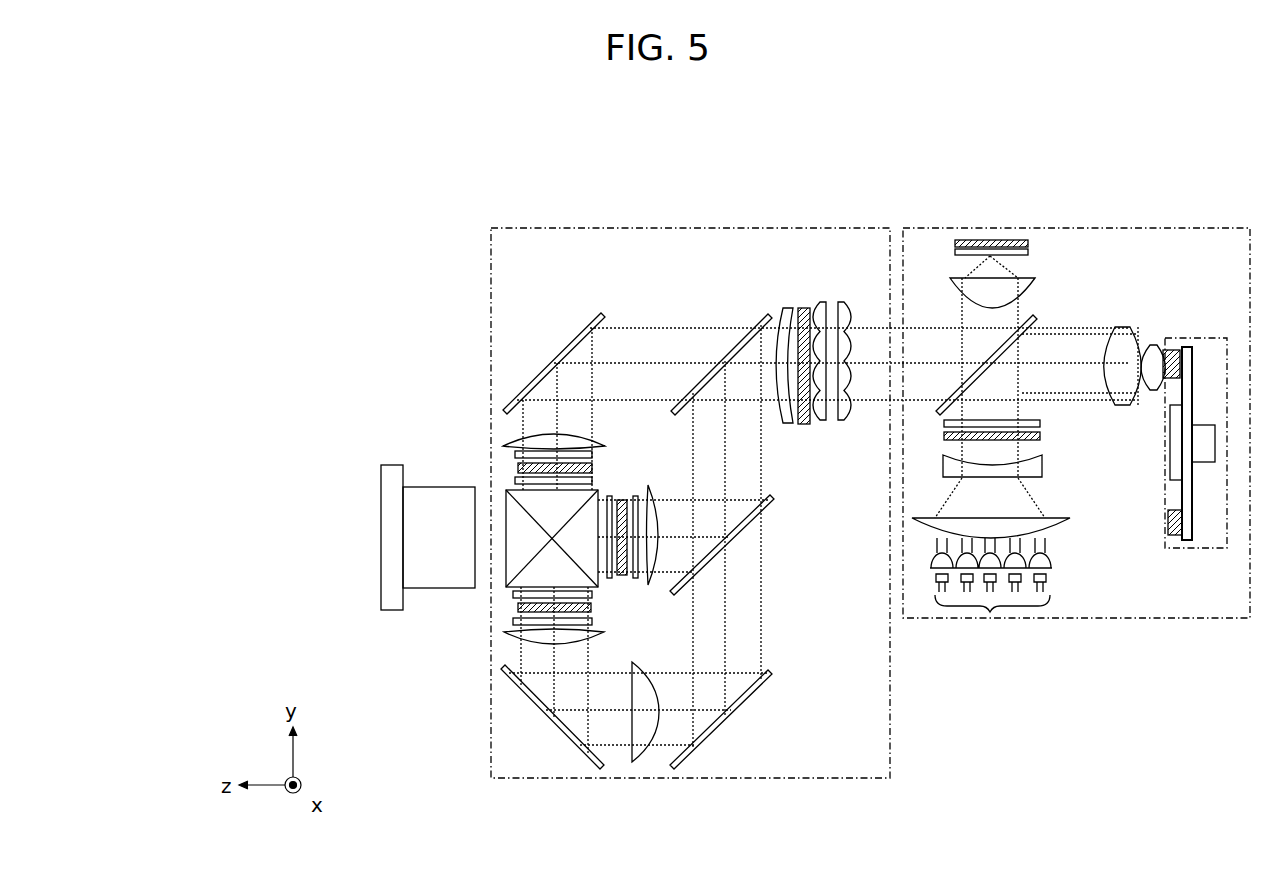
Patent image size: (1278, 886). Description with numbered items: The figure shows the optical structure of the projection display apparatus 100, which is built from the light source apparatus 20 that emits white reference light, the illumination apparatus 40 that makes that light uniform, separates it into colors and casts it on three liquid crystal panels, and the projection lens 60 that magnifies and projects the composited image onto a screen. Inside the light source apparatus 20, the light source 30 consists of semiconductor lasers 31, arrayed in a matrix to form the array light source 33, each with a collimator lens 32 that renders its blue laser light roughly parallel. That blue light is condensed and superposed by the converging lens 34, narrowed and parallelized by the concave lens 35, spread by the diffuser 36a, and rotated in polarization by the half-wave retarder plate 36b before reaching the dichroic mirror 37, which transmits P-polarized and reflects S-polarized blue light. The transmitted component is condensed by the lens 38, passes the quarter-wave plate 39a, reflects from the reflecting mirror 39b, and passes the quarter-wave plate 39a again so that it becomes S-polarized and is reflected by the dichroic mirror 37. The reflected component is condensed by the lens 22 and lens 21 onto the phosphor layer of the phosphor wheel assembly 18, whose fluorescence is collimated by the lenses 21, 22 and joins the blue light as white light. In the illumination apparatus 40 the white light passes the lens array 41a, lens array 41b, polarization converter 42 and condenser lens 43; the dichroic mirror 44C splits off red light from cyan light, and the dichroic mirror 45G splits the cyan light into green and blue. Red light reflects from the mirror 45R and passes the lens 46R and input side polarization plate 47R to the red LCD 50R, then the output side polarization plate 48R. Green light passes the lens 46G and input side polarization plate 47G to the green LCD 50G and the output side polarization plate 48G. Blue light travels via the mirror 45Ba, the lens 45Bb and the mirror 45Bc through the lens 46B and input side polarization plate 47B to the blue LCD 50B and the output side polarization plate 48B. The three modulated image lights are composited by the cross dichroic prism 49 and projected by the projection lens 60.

The projection display apparatus 100 is at (495, 207).
The illumination apparatus 40 is at (893, 735).
The light source apparatus 20 is at (1228, 618).
The phosphor wheel assembly 18 is at (1205, 548).
The lens 21 is at (1156, 344).
The lens 22 is at (1138, 328).
The light source 30 is at (1058, 614).
The semiconductor laser 31 is at (1048, 580).
The collimator lens 32 is at (1050, 570).
The array light source 33 is at (990, 612).
The converging lens 34 is at (912, 523).
The concave lens 35 is at (943, 466).
The diffuser 36a is at (943, 437).
The half-wave retarder plate 36b is at (1040, 423).
The dichroic mirror 37 is at (1036, 318).
The lens 38 is at (1035, 281).
The λ/4 wavelength plate 39a is at (1030, 250).
The reflecting mirror 39b is at (963, 240).
The lens array 41a is at (840, 300).
The lens array 41b is at (818, 300).
The polarization converter 42 is at (801, 306).
The condenser lens 43 is at (782, 308).
The dichroic mirror 44C is at (718, 360).
The mirror 45R is at (553, 358).
The dichroic mirror 45G is at (728, 548).
The mirror 45Ba is at (743, 705).
The lens 45Bb is at (637, 753).
The mirror 45Bc is at (552, 720).
The lens 46R is at (512, 440).
The lens 46G is at (649, 492).
The lens 46B is at (513, 637).
The input side polarization plate 47R is at (515, 455).
The input side polarization plate 47G is at (635, 496).
The input side polarization plate 47B is at (515, 622).
The output side polarization plate 48R is at (515, 480).
The output side polarization plate 48G is at (609, 580).
The output side polarization plate 48B is at (513, 595).
The red LCD 50R is at (518, 468).
The green LCD 50G is at (620, 580).
The blue LCD 50B is at (515, 608).
The cross dichroic prism 49 is at (507, 533).
The projection lens 60 is at (393, 495).